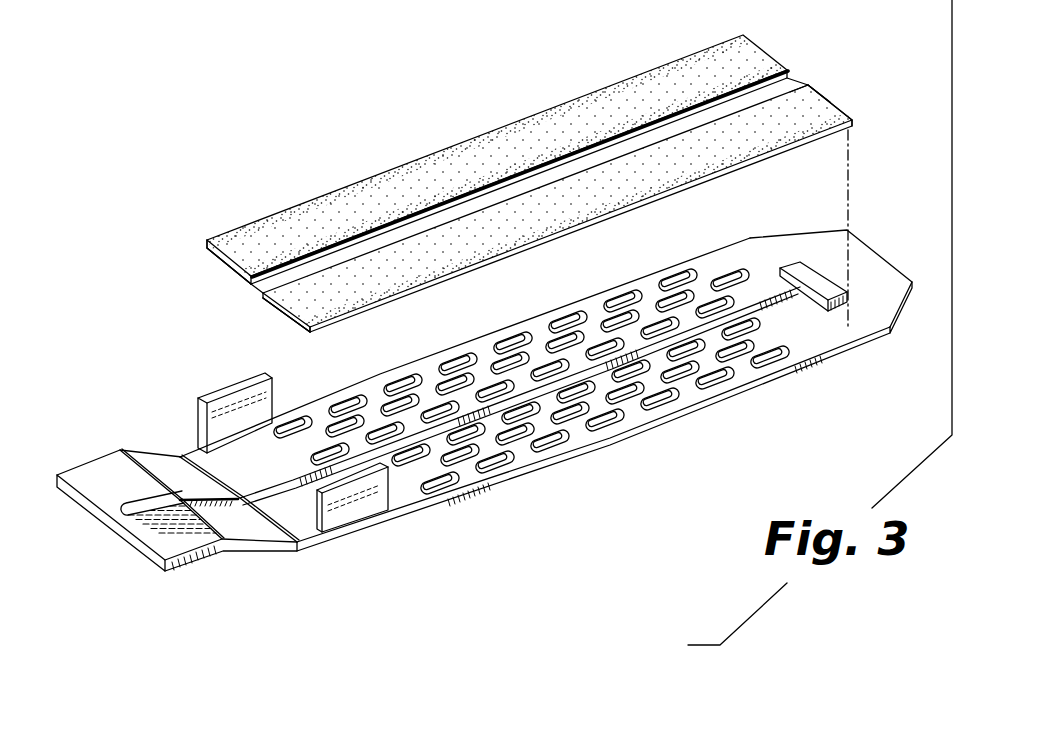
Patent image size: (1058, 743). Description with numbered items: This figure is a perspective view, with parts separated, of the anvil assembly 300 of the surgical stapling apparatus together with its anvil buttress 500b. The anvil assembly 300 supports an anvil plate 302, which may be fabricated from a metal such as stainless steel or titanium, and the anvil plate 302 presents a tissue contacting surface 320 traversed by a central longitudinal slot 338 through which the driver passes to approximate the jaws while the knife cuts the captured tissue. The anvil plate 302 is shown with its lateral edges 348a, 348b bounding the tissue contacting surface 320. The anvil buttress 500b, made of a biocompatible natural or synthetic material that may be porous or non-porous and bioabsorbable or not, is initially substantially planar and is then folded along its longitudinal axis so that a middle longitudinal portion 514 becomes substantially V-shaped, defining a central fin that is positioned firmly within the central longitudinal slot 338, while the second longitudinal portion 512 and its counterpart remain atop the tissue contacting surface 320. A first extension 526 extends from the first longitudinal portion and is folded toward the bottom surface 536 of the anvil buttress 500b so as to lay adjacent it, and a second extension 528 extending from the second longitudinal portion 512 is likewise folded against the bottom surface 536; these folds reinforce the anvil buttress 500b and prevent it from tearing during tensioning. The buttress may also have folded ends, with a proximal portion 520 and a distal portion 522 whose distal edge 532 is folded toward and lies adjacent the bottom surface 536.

The anvil assembly 300 is at (893, 232).
The anvil plate 302 is at (905, 305).
The tissue contacting surface 320 is at (540, 330).
The central longitudinal slot 338 is at (293, 455).
The first side edge of base 348a is at (724, 248).
The second side edge of base 348b is at (808, 358).
The anvil buttress 500b is at (515, 199).
The second longitudinal portion 512 is at (557, 191).
The middle longitudinal portion 514 is at (250, 290).
The proximal portion 520 is at (451, 203).
The distal portion 522 is at (822, 100).
The first extension 526 is at (205, 242).
The second extension 528 is at (305, 323).
The distal edge 532 is at (856, 115).
The bottom surface 536 is at (210, 268).